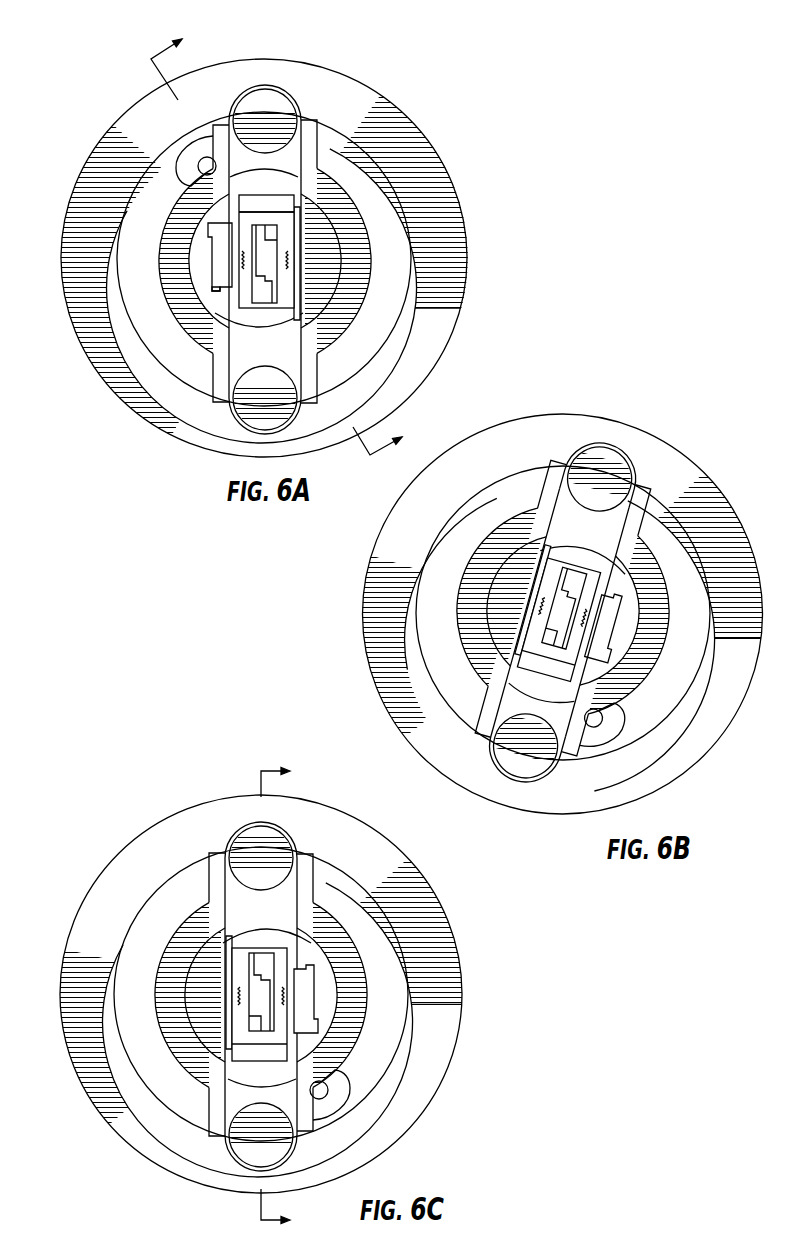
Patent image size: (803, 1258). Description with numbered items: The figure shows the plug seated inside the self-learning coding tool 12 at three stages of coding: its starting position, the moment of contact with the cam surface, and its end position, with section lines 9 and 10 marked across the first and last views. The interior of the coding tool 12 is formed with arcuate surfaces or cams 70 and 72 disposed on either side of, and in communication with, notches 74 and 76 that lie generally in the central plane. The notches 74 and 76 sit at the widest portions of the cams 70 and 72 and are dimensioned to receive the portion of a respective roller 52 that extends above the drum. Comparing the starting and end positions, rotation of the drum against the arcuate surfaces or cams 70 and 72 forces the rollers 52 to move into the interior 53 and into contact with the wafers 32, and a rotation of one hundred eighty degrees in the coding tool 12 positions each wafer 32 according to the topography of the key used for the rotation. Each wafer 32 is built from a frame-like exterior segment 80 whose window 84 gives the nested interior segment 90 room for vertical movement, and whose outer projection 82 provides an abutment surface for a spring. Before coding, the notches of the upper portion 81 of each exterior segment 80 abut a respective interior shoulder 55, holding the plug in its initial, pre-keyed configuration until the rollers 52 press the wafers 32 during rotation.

In FIG. 6C, the section line 9- 9 is at (286, 997).
In FIG. 6A, the lock assembly section line 10- 10 is at (292, 239).
In FIG. 6C, the coding tool 12 is at (443, 913).
In FIG. 6A, the wafer 32 is at (290, 248).
In FIG. 6C, the wafer 32 is at (225, 991).
In FIG. 6A, the roller 52 is at (262, 102).
In FIG. 6B, the roller 52 is at (607, 459).
In FIG. 6C, the roller 52 is at (251, 836).
In FIG. 6A, the interior 53 is at (312, 276).
In FIG. 6A, the shoulder 55 is at (212, 170).
In FIG. 6A, the arcuate surface or cam 70 is at (452, 308).
In FIG. 6B, the arcuate surface or cam 70 is at (703, 492).
In FIG. 6C, the arcuate surface or cam 70 is at (353, 852).
In FIG. 6A, the arcuate surface or cam 72 is at (170, 403).
In FIG. 6B, the arcuate surface or cam 72 is at (400, 648).
In FIG. 6C, the arcuate surface or cam 72 is at (192, 1150).
In FIG. 6B, the notch 74 is at (555, 452).
In FIG. 6B, the notch 76 is at (572, 772).
In FIG. 6C, the exterior segment 80 is at (253, 922).
In FIG. 6A, the upper portion 81 is at (256, 193).
In FIG. 6A, the outer projection 82 is at (220, 293).
In FIG. 6C, the outer projection 82 is at (309, 946).
In FIG. 6A, the window 84 is at (250, 204).
In FIG. 6C, the window 84 is at (280, 1034).
In FIG. 6A, the interior segment 90 is at (217, 293).